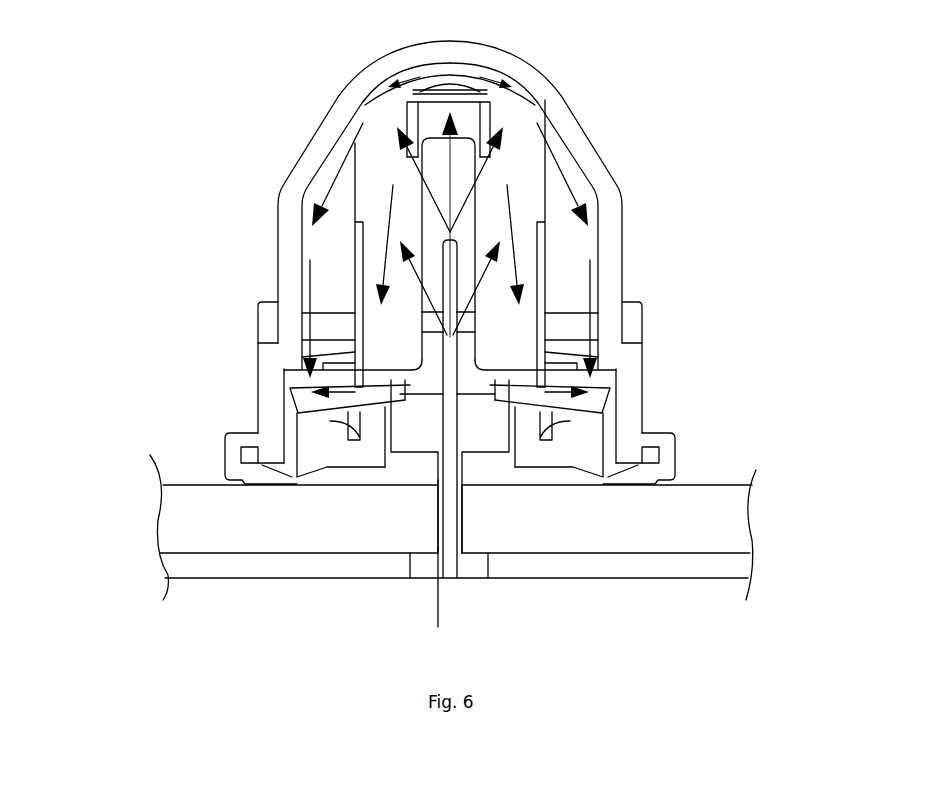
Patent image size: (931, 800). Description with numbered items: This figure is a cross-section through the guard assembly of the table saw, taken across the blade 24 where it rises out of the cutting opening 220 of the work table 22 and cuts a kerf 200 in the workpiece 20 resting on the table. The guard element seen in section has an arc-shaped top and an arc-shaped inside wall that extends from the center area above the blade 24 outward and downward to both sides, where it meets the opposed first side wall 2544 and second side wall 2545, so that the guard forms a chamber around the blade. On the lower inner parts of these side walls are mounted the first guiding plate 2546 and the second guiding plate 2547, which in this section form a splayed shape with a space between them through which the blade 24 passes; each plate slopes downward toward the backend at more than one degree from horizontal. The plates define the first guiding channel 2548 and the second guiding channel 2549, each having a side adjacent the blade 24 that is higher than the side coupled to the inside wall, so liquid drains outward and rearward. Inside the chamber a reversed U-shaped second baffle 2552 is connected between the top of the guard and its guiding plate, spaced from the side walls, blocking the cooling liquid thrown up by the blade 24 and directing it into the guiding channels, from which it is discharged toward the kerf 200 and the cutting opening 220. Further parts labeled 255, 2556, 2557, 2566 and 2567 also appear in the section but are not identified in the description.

The workpiece 20 is at (220, 503).
The work table 22 is at (200, 567).
The blade 24 is at (452, 418).
The kerf 200 is at (438, 595).
The cutting opening 220 is at (473, 568).
The retaining clip 255 is at (670, 463).
The first side wall 2544 is at (622, 226).
The second side wall 2545 is at (283, 260).
The first guiding plate 2546 is at (547, 407).
The second guiding plate 2547 is at (350, 407).
The first guiding channel 2548 is at (592, 393).
The second guiding channel 2549 is at (328, 393).
The second baffle 2552 is at (510, 163).
The right skirt 2556 is at (497, 400).
The left skirt 2557 is at (400, 397).
The seal plate lower face 2566 is at (593, 407).
The left chamber wall 2567 is at (303, 403).